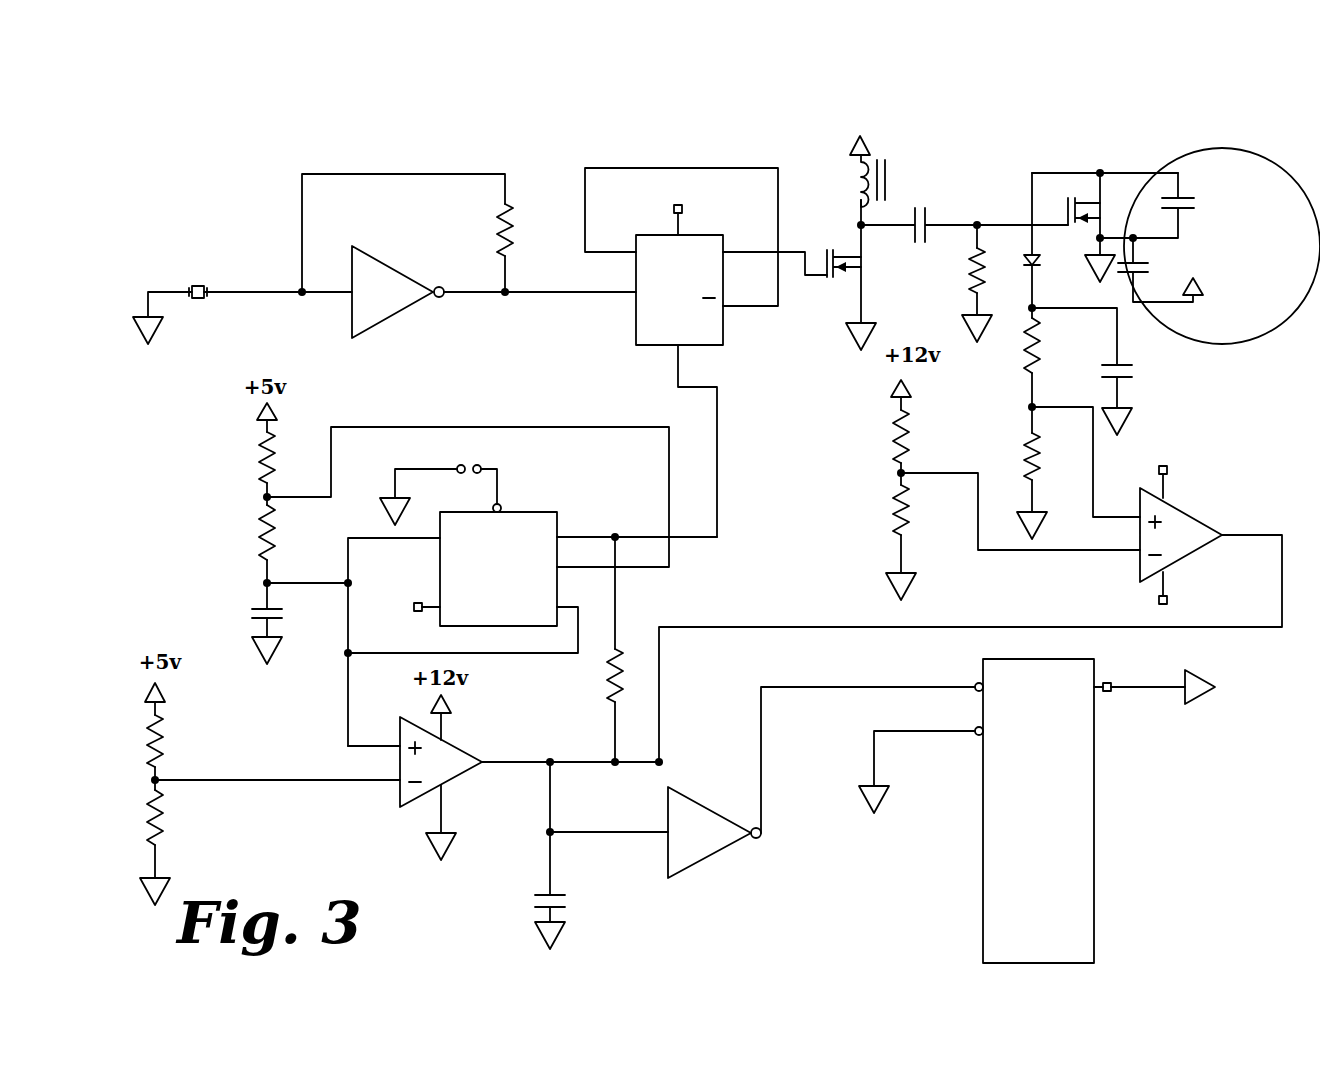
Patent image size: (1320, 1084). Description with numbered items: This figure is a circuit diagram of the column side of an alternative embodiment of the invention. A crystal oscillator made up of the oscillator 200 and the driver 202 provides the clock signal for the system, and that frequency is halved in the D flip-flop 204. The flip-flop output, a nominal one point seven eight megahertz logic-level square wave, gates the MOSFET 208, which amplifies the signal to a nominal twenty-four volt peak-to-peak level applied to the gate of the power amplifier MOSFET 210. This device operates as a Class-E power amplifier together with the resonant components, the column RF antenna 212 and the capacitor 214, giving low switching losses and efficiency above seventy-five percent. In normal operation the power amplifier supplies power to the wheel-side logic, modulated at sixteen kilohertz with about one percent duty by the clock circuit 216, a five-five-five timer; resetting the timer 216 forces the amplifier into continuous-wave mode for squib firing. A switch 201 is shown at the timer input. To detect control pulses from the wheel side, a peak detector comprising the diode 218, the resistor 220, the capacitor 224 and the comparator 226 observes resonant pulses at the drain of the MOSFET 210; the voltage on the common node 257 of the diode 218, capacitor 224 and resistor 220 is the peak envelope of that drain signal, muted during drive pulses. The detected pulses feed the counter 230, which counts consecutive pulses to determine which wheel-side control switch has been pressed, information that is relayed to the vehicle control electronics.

The oscillator 200 is at (201, 286).
The switch 201 is at (473, 462).
The driver 202 is at (430, 286).
The D flip-flop 204 is at (645, 235).
The MOSFET 208 is at (825, 256).
The power amplifier MOSFET 210 is at (1067, 213).
The column RF antenna 212 is at (1310, 283).
The capacitor 214 is at (1190, 195).
The clock circuit 216 is at (560, 532).
The diode 218 is at (1027, 275).
The resistor 220 is at (1030, 352).
The capacitor 224 is at (1128, 365).
The comparator 226 is at (1185, 502).
The counter 230 is at (983, 832).
The common node 257 is at (1035, 306).